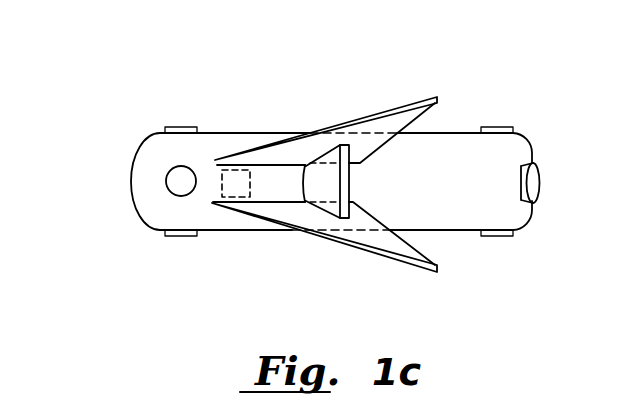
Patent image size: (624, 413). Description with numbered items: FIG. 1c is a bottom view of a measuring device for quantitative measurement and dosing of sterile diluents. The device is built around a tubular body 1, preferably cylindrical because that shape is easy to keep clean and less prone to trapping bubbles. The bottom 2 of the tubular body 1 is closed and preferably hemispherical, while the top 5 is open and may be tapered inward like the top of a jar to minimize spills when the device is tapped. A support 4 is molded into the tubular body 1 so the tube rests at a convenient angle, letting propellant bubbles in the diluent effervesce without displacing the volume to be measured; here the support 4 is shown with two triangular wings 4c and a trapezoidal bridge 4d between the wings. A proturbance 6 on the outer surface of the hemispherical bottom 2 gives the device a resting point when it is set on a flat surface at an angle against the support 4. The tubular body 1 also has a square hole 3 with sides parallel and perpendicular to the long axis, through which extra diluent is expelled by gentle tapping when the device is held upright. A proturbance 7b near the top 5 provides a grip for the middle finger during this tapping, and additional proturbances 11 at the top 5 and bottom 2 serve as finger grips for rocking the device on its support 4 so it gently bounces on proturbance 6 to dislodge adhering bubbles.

The tubular body 1 is at (456, 128).
The bottom of the tube 2 is at (133, 182).
The square hole 3 is at (250, 193).
The support 4 is at (324, 178).
The triangular wings 4c is at (362, 125).
The trapezoidal bridge 4d is at (335, 185).
The top of the tube 5 is at (570, 173).
The proturbance 6 is at (178, 186).
The proturbance 7b is at (537, 190).
The additional proturbances 11 is at (177, 127).